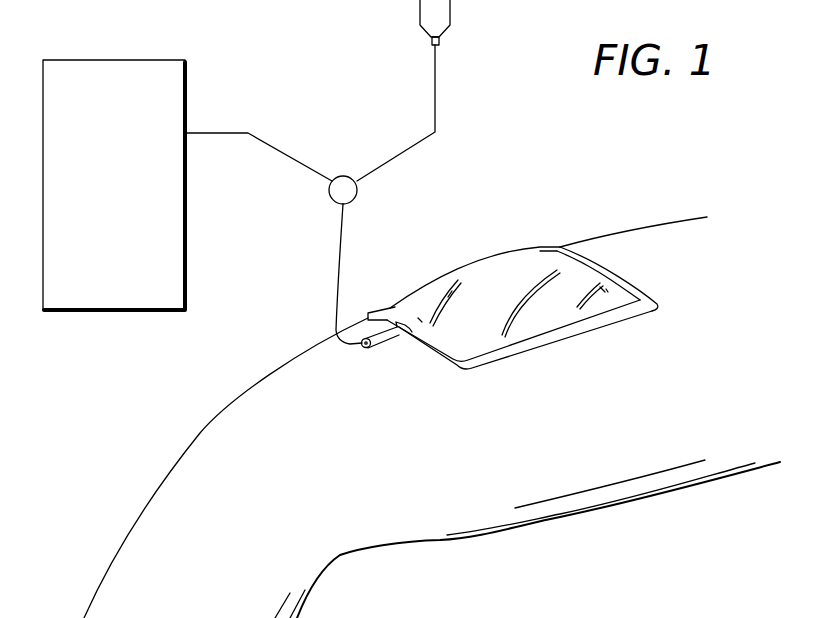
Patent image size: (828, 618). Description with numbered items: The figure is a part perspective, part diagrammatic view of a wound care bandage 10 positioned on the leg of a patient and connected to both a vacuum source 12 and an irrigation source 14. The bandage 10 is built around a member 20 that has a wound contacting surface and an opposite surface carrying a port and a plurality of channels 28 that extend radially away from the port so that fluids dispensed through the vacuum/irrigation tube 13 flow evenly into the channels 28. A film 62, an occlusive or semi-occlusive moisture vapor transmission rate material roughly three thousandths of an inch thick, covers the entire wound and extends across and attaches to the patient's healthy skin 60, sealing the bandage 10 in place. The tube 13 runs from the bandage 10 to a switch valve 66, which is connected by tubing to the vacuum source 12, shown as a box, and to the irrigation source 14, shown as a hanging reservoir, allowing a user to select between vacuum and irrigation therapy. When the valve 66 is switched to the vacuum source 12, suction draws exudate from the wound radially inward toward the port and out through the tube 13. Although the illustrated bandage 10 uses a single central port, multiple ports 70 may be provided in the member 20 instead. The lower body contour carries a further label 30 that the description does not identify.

The wound care bandage 10 is at (533, 238).
The vacuum source 12 is at (120, 107).
The vacuum/irrigation tube 13 is at (383, 338).
The irrigation source 14 is at (440, 3).
The member 20 is at (777, 617).
The channels 28 is at (601, 540).
The body tissue layer 30 is at (610, 539).
The healthy skin 60 is at (610, 242).
The film 62 is at (623, 290).
The switch valve 66 is at (343, 190).
The ports 70 is at (419, 604).